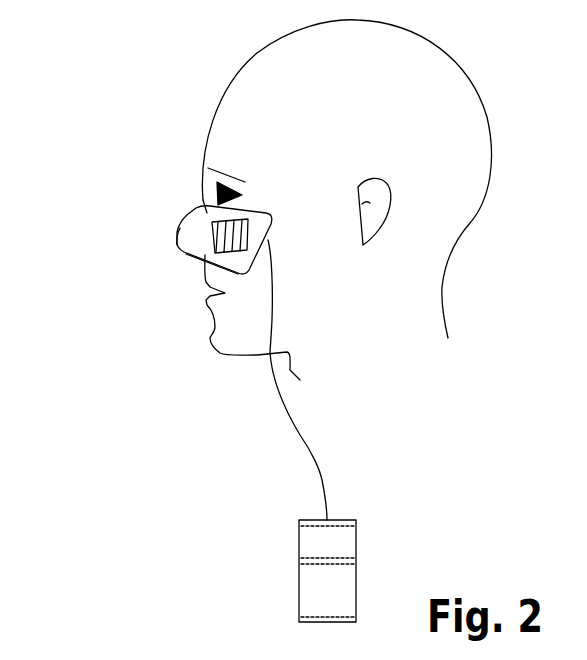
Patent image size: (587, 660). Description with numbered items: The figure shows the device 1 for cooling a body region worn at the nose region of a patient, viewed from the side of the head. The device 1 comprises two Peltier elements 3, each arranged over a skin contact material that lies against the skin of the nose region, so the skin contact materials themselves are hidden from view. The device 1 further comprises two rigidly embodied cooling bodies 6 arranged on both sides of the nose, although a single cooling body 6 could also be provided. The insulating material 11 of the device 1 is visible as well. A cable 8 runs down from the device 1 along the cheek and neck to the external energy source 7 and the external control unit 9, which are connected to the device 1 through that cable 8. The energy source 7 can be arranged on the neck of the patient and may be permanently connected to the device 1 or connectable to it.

The device 1 is at (206, 207).
The Peltier element 3 is at (203, 217).
The insulating material 11 is at (184, 238).
The cooling body 6 is at (210, 257).
The cable 8 is at (315, 455).
The external energy source 7 is at (335, 547).
The external control unit 9 is at (325, 583).